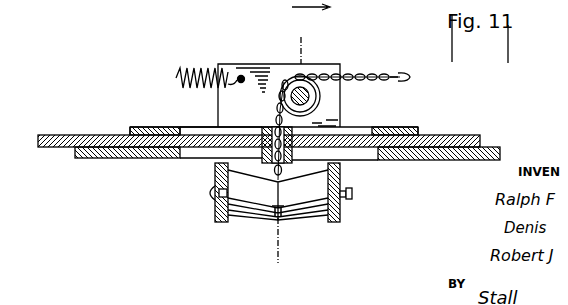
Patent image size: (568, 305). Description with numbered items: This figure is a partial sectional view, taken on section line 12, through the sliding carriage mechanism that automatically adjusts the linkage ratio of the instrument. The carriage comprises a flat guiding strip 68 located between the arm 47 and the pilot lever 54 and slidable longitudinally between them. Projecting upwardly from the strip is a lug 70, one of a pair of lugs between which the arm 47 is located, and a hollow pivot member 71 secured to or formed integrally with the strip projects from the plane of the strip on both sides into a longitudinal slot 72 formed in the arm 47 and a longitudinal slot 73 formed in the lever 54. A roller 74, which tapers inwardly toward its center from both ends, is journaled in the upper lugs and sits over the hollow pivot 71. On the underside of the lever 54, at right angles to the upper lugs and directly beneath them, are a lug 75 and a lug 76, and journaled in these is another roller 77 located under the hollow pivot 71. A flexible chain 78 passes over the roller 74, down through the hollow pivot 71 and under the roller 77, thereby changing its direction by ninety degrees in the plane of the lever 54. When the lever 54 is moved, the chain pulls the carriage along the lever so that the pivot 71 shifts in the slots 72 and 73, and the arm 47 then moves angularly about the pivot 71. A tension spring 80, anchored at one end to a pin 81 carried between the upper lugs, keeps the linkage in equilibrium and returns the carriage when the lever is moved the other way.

The section line 12 is at (311, 45).
The arm 47 is at (403, 131).
The pilot lever 54 is at (431, 161).
The flat guiding strip 68 is at (487, 146).
The lug 70 is at (252, 63).
The hollow pivot member 71 is at (263, 133).
The longitudinal slot 72 is at (200, 132).
The longitudinal slot 73 is at (202, 157).
The roller 74 is at (317, 100).
The lug 75 is at (216, 215).
The lug 76 is at (340, 218).
The roller 77 is at (246, 210).
The flexible chain 78 is at (379, 74).
The tension spring 80 is at (190, 64).
The pin 81 is at (243, 84).